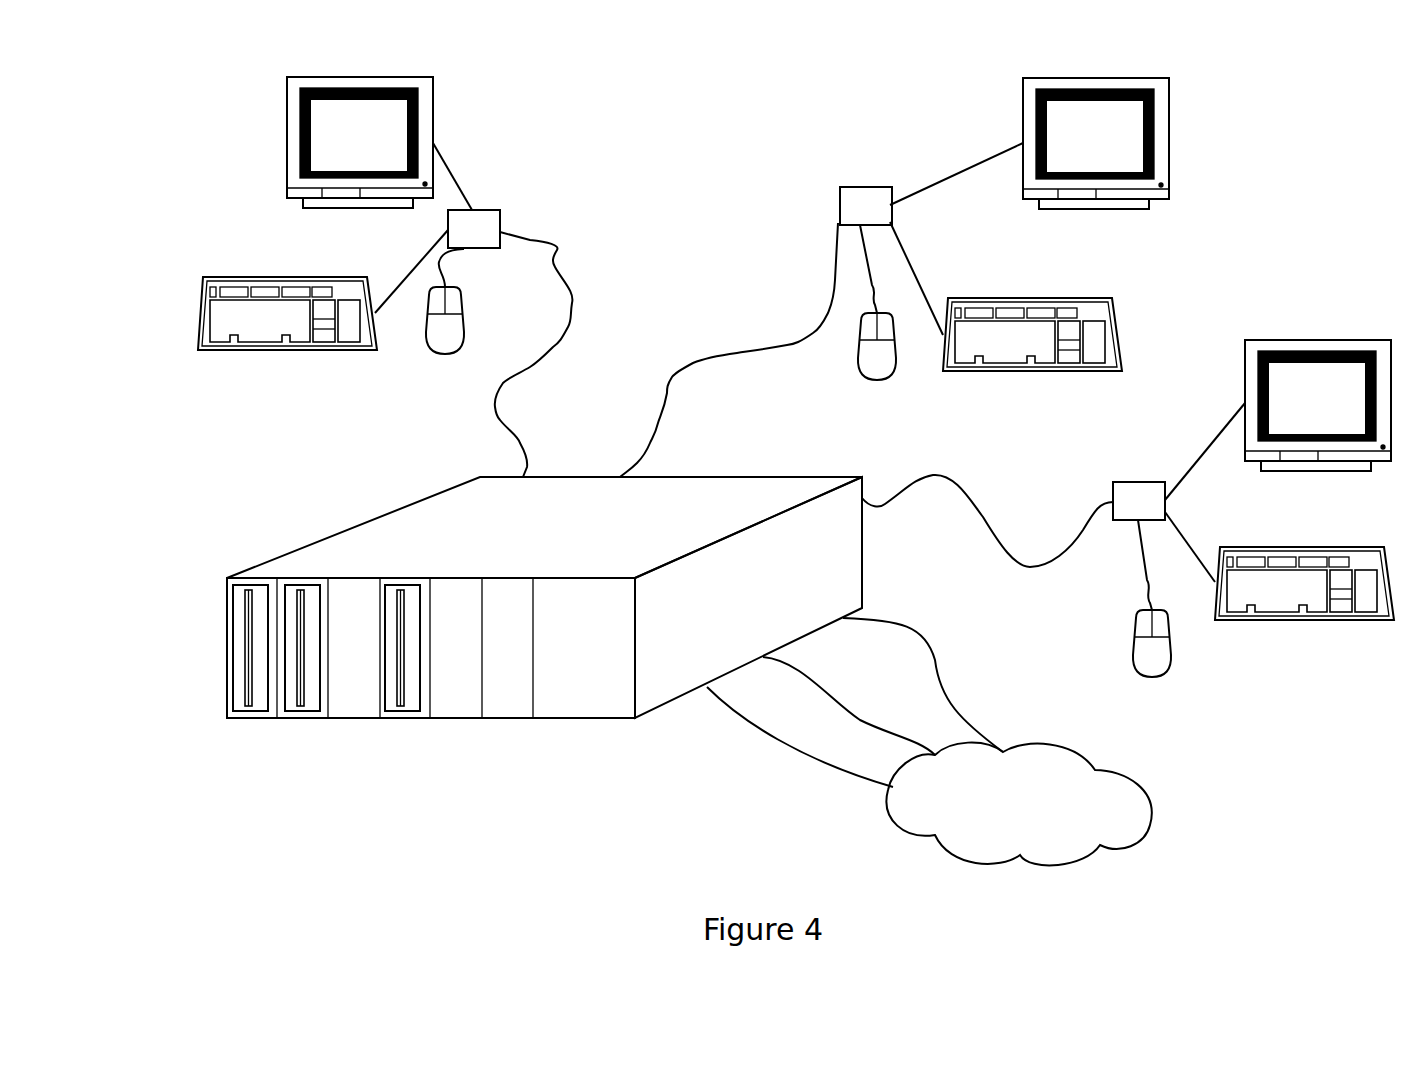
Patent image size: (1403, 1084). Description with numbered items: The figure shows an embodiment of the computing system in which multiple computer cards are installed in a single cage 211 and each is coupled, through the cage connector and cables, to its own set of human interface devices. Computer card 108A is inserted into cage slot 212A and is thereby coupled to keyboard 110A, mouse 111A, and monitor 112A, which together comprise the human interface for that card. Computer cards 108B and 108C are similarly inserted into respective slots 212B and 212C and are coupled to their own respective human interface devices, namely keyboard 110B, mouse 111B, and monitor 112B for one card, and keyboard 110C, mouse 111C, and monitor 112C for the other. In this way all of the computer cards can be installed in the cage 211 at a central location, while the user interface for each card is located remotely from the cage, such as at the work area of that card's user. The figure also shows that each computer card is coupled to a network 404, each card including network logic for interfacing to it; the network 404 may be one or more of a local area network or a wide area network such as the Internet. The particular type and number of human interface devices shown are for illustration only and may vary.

The monitor 112A is at (379, 172).
The keyboard 110A is at (323, 321).
The mouse 111A is at (440, 330).
The monitor 112B is at (1029, 173).
The keyboard 110B is at (1006, 327).
The mouse 111B is at (876, 333).
The monitor 112C is at (1278, 435).
The keyboard 110C is at (1279, 595).
The mouse 111C is at (1150, 628).
The cage 211 is at (257, 570).
The cage slot 212A is at (228, 718).
The slot 212B is at (300, 717).
The slot 212C is at (402, 718).
The computer card 108A is at (248, 715).
The computer card 108B is at (327, 713).
The computer card 108C is at (422, 702).
The network 404 is at (1002, 831).